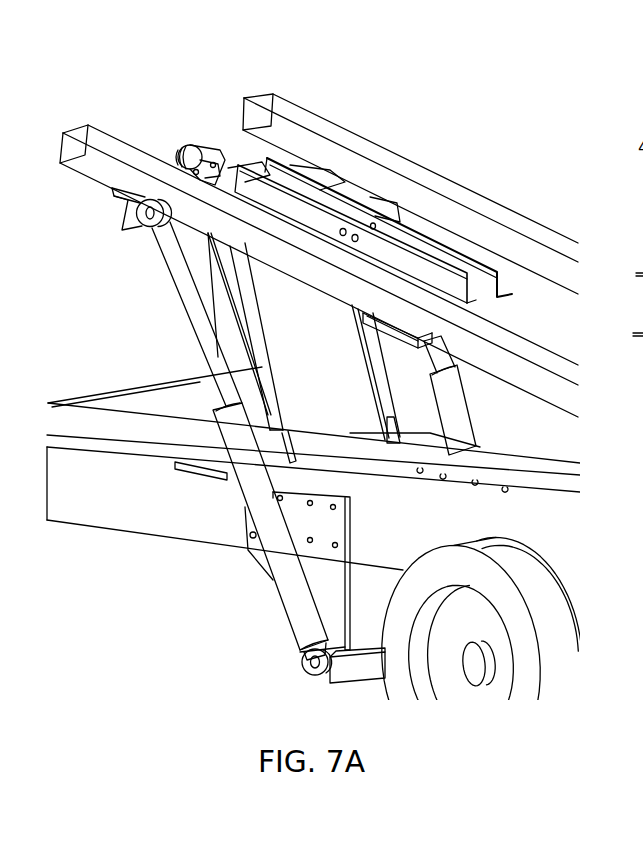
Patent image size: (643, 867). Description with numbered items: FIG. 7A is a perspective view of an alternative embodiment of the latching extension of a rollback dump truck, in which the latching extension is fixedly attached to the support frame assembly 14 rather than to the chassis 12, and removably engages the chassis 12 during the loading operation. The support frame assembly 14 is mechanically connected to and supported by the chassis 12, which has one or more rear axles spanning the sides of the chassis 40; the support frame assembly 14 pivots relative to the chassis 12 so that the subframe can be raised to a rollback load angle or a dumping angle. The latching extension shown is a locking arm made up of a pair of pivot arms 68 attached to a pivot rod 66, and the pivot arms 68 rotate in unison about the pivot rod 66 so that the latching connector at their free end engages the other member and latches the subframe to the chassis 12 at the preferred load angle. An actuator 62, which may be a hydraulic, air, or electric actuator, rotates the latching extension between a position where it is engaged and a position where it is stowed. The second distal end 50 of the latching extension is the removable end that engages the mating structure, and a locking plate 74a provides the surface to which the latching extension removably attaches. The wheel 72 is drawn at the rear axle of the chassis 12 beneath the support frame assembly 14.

The support frame assembly 14 is at (433, 198).
The pivot rod 66 is at (295, 165).
The actuator 62 is at (208, 150).
The pivot arms 68 is at (257, 353).
The locking plate 74a is at (338, 440).
The sides of the chassis 40 is at (442, 515).
The chassis 12 is at (222, 520).
The wheel 72 is at (512, 657).
The second distal end 50 is at (633, 195).